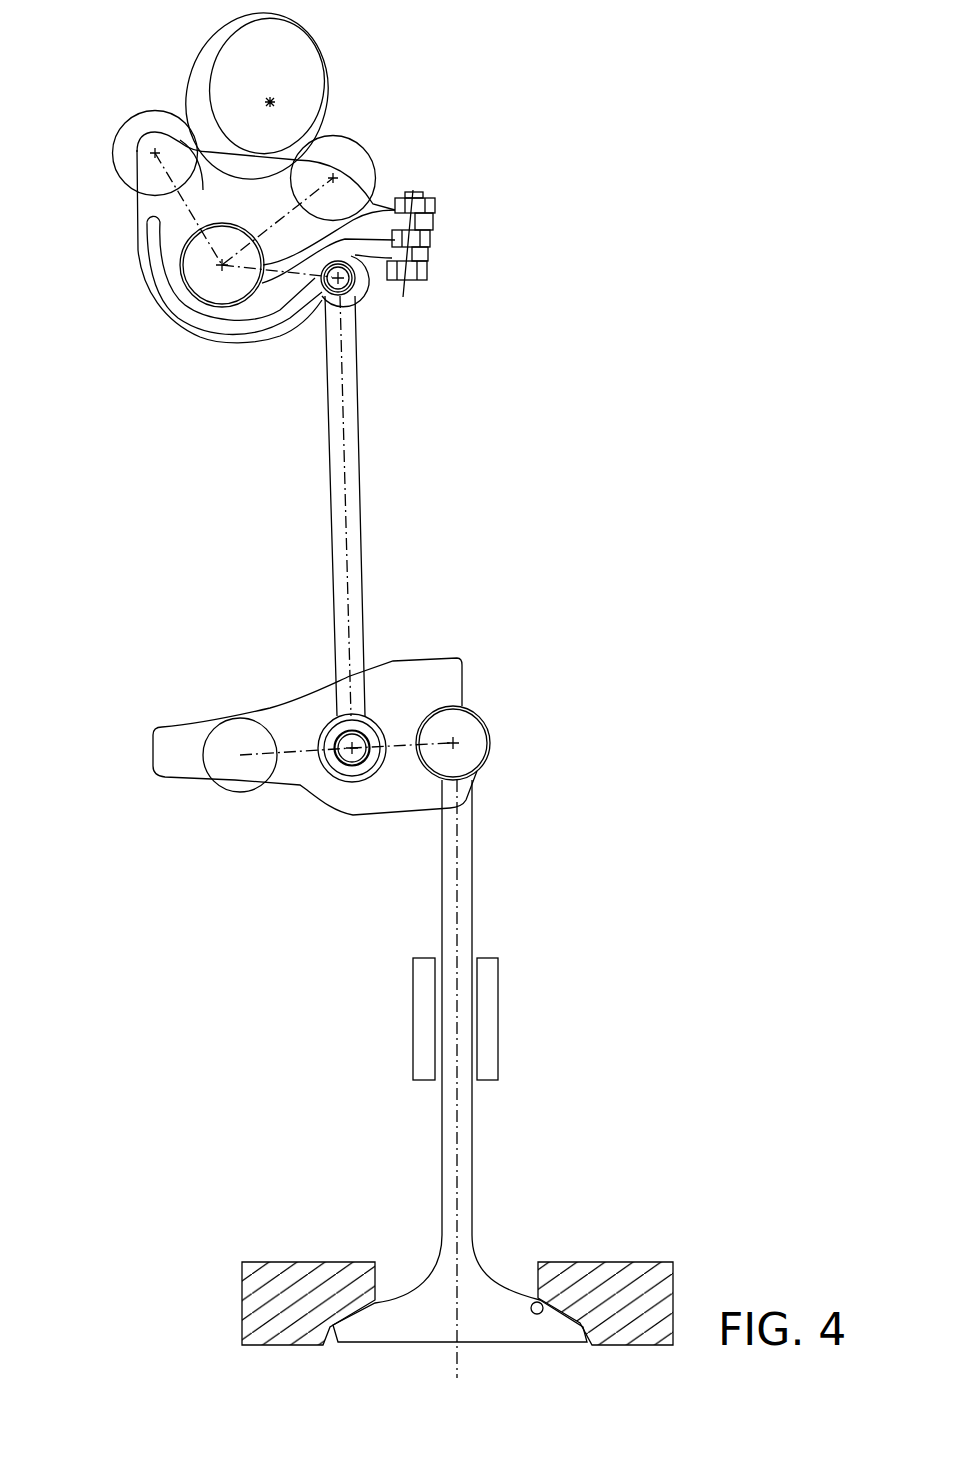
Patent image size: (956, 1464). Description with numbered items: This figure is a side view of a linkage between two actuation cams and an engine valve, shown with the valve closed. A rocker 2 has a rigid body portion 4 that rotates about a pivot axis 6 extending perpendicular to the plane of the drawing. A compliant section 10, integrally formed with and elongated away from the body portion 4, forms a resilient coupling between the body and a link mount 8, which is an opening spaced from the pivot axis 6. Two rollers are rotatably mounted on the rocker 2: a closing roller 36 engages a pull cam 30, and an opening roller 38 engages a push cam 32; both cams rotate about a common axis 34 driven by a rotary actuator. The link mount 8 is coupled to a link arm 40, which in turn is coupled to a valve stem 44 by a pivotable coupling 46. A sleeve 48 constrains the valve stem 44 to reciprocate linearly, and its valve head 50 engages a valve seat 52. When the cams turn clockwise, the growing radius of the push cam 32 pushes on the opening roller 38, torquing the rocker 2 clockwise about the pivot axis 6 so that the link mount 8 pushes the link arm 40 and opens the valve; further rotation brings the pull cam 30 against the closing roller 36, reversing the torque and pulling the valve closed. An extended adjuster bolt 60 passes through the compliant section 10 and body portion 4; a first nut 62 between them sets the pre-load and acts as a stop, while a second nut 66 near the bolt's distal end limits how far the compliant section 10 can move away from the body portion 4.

The rocker 2 is at (86, 211).
The rigid body portion 4 is at (162, 111).
The pivot axis 6 is at (190, 312).
The link mount 8 is at (362, 305).
The compliant section 10 is at (203, 333).
The pull cam 30 is at (200, 75).
The push cam 32 is at (327, 40).
The common axis 34 is at (274, 102).
The closing roller 36 is at (123, 148).
The opening roller 38 is at (357, 152).
The link arm 40 is at (350, 477).
The valve stem 44 is at (465, 1177).
The pivotable coupling 46 is at (450, 682).
The sleeve 48 is at (490, 1025).
The valve head 50 is at (487, 1323).
The valve seat 52 is at (532, 1296).
The adjuster bolt 60 is at (427, 273).
The first nut 62 is at (430, 240).
The second nut 66 is at (435, 207).